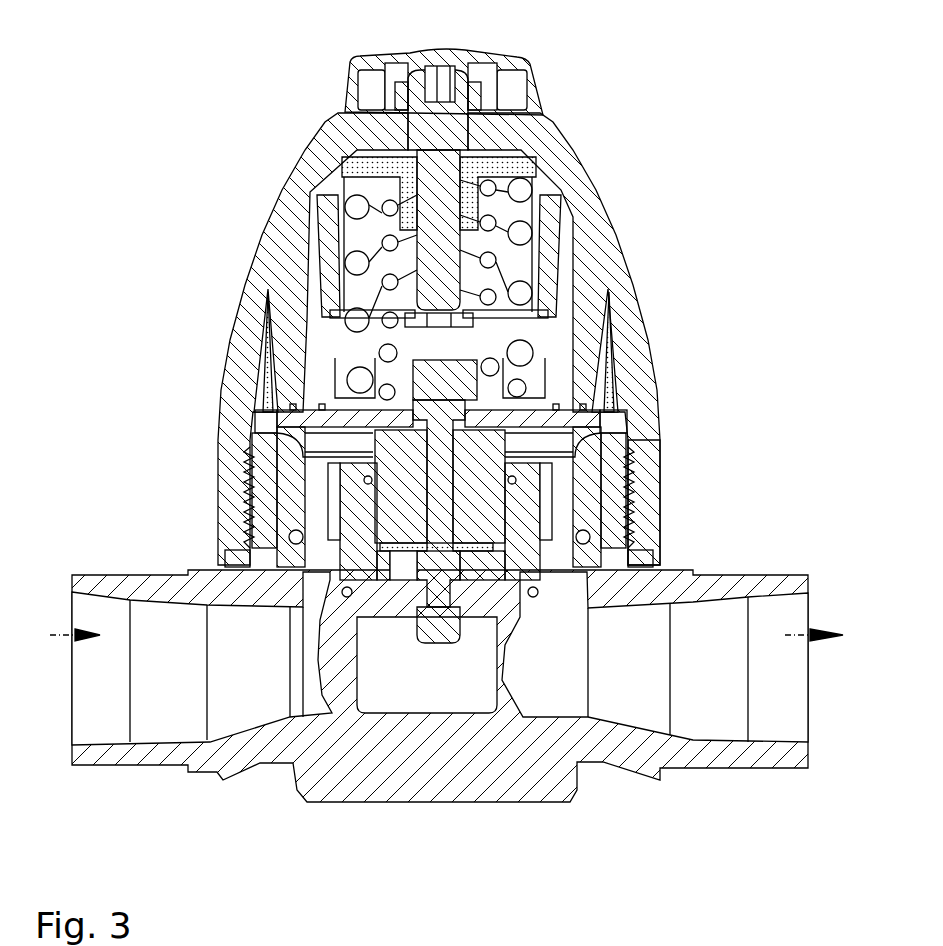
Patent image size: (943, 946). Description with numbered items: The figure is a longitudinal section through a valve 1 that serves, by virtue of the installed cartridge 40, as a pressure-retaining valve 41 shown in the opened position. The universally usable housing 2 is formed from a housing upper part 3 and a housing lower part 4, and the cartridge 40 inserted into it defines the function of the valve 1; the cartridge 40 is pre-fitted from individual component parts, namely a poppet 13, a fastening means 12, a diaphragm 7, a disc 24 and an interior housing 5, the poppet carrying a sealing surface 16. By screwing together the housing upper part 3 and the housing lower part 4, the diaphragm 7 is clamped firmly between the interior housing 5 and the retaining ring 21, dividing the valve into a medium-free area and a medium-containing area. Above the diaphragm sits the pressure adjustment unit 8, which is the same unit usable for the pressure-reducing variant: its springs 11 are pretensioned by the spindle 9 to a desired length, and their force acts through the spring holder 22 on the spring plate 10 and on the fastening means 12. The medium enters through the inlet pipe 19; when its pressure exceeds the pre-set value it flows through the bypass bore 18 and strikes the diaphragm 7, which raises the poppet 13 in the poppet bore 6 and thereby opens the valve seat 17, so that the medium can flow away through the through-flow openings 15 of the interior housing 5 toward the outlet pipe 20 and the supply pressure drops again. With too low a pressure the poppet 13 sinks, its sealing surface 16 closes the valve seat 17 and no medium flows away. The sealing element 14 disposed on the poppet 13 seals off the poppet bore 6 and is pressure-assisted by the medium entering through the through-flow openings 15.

The valve 1 is at (673, 252).
The housing 2 is at (663, 203).
The housing upper part 3 is at (583, 173).
The housing lower part 4 is at (603, 762).
The interior housing 5 is at (660, 442).
The poppet bore 6 is at (440, 612).
The diaphragm 7 is at (612, 399).
The pressure adjustment unit 8 is at (530, 72).
The spindle 9 is at (565, 122).
The spring plate 10 is at (540, 382).
The springs 11 is at (347, 260).
The fastening means 12 is at (333, 400).
The poppet 13 is at (655, 412).
The sealing element 14 is at (662, 470).
The through-flow openings 15 is at (673, 550).
The sealing surface 16 is at (487, 570).
The valve seat 17 is at (397, 580).
The bypass bore 18 is at (330, 490).
The inlet pipe 19 is at (107, 705).
The outlet pipe 20 is at (768, 693).
The retaining ring 21 is at (262, 413).
The spring holder 22 is at (357, 168).
The disc 24 is at (515, 418).
The cartridge 40 is at (662, 513).
The pressure-retaining valve 41 is at (655, 33).